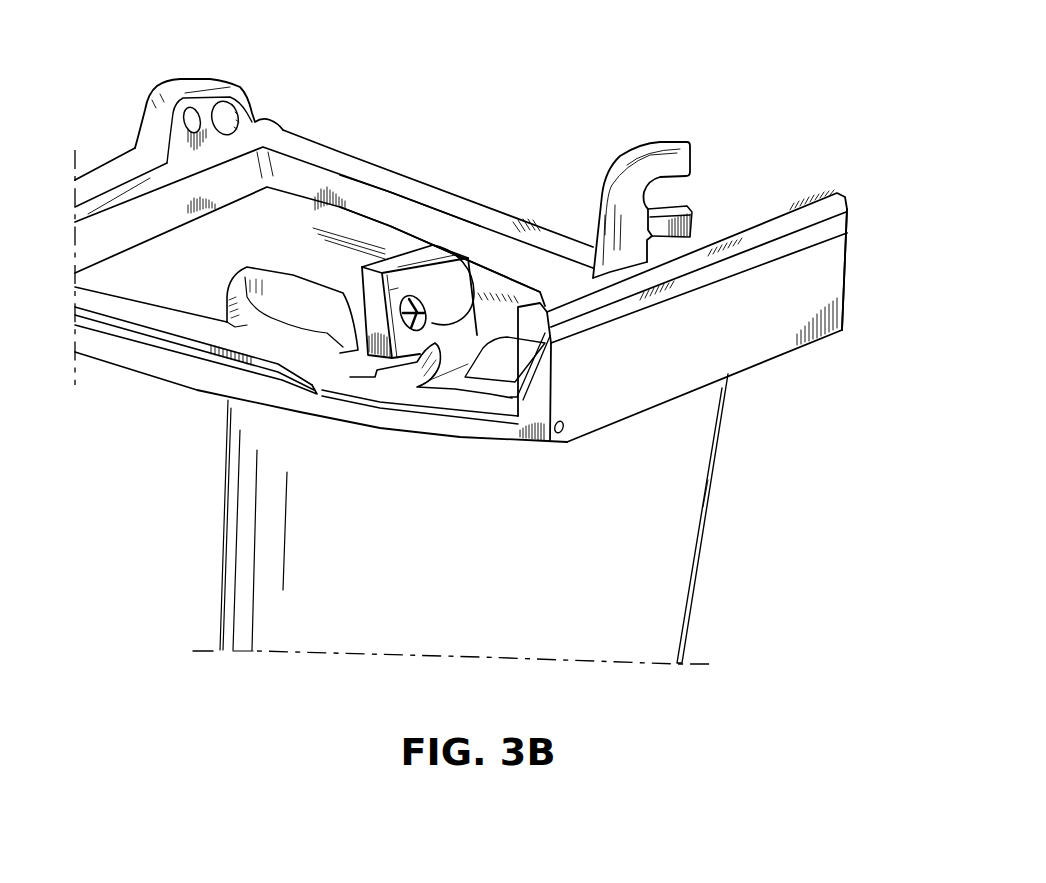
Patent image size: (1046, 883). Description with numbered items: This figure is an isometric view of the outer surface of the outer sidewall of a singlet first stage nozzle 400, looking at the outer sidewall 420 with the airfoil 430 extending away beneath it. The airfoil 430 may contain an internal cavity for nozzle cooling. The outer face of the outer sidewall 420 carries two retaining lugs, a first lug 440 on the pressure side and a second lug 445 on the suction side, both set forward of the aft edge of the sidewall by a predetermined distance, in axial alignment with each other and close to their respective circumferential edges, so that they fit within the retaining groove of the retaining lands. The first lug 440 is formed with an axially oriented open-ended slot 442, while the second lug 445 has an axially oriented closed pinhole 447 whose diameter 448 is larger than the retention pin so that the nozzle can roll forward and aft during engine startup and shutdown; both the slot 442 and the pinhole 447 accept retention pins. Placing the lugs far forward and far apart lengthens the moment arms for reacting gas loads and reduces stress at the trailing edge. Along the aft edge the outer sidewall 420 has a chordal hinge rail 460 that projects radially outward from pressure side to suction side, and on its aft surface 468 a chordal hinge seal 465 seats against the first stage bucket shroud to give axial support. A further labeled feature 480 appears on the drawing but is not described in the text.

The first stage nozzle 400 is at (662, 36).
The outer sidewall 420 is at (513, 180).
The airfoil 430 is at (698, 553).
The first lug 440 is at (655, 147).
The open-ended slot 442 is at (677, 198).
The second lug 445 is at (402, 263).
The closed pinhole 447 is at (401, 308).
The diameter of pinhole 448 is at (479, 355).
The chordal hinge rail 460 is at (840, 315).
The chordal hinge seal 465 is at (823, 233).
The aft surface 468 is at (783, 292).
The mounting bracket 480 is at (190, 82).